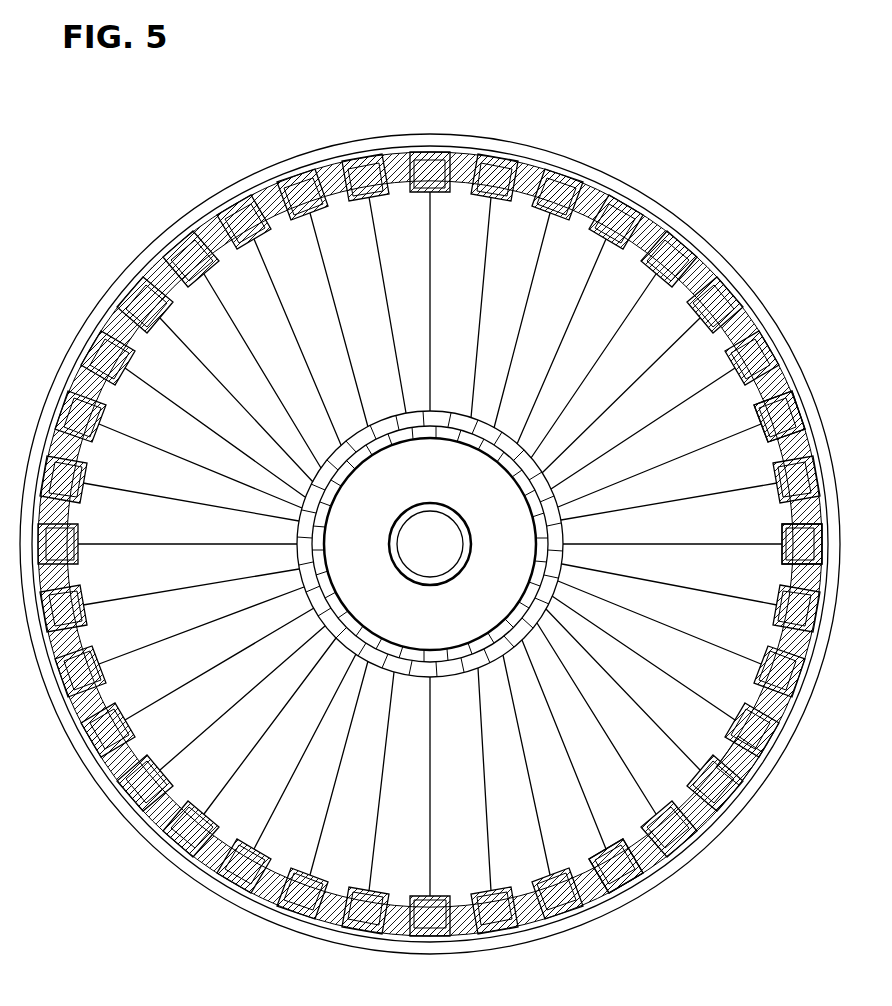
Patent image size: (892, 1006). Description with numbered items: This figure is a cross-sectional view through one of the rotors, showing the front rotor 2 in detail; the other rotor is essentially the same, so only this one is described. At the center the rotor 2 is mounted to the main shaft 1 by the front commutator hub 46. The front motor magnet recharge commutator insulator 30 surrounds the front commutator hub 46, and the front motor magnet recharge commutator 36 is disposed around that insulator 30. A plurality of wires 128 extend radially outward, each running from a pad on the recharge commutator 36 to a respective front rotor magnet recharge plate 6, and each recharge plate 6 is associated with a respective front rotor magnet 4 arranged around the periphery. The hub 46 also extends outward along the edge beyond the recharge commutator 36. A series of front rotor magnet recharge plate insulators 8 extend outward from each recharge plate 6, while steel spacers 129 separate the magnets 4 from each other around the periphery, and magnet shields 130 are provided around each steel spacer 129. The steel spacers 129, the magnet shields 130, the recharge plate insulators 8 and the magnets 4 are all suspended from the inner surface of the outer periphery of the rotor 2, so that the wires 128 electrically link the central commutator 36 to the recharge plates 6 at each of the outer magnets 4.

The main shaft 1 is at (440, 556).
The front rotor 2 is at (802, 695).
The front rotor magnet 4 is at (773, 663).
The front rotor magnet recharge plate 6 is at (782, 527).
The front rotor magnet recharge plate insulator 8 is at (797, 407).
The front motor magnet recharge commutator insulator 30 is at (416, 617).
The front motor magnet recharge commutator 36 is at (530, 505).
The front commutator hub 46 is at (428, 503).
The wires 128 is at (643, 620).
The steel spacer 129 is at (745, 757).
The magnet shield 130 is at (697, 807).